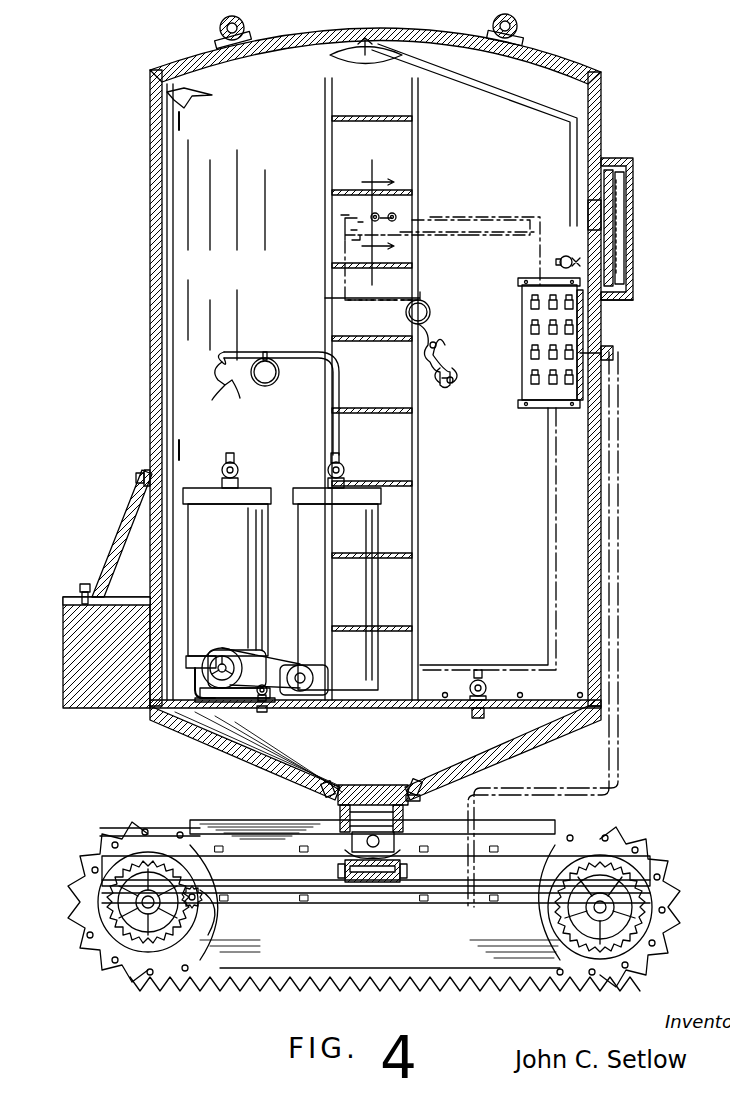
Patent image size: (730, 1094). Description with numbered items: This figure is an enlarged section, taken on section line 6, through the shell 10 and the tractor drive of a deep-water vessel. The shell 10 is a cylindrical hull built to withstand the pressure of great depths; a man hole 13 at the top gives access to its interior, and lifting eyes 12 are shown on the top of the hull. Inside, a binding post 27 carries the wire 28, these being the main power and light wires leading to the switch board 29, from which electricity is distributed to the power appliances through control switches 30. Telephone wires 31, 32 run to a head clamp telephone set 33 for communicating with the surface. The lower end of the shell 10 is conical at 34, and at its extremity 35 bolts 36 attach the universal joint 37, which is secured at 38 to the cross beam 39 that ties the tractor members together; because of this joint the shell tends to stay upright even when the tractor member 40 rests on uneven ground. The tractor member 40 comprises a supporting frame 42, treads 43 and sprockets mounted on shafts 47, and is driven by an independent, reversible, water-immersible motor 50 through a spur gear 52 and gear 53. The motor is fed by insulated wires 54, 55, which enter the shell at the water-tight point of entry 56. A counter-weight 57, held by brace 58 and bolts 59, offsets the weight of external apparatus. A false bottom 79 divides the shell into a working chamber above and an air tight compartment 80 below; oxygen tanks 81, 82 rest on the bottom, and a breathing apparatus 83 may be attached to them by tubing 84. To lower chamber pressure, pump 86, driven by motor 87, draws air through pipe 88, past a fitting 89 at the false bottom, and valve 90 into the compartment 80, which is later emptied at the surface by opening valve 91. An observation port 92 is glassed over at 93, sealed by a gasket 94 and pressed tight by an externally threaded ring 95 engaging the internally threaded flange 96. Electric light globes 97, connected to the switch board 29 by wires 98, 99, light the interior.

The section line 6- 6 is at (378, 220).
The shell 10 is at (150, 292).
The lifting eye bolts 12 is at (220, 30).
The man hole 13 is at (340, 76).
The binding post 27 is at (378, 214).
The wire 28 is at (396, 217).
The switch board 29 is at (525, 372).
The control switches 30 is at (568, 397).
The telephone wire 31 is at (418, 300).
The telephone wire 32 is at (380, 304).
The head clamp telephone set 33 is at (455, 360).
The conical lower end 34 is at (250, 752).
The extremity 35 is at (372, 785).
The bolts 36 is at (418, 801).
The universal joint 37 is at (340, 815).
The securing point 38 is at (407, 871).
The cross beam 39 is at (385, 884).
The tractor member 40 is at (488, 977).
The supporting frame 42 is at (277, 877).
The treads 43 is at (580, 987).
The shaft 47 is at (148, 905).
The motor 50 is at (200, 912).
The spur gear 52 is at (198, 894).
The gear 53 is at (137, 880).
The wire 54 is at (607, 761).
The wire 55 is at (620, 766).
The point of entry 56 is at (612, 350).
The counter-weight 57 is at (80, 675).
The brace 58 is at (120, 540).
The bolts 59 is at (136, 479).
The false bottom 79 is at (510, 710).
The air tight compartment 80 is at (357, 743).
The oxygen tank 81 is at (227, 575).
The oxygen tank 82 is at (337, 571).
The breathing apparatus 83 is at (236, 382).
The tubing 84 is at (342, 386).
The pump 86 is at (225, 650).
The motor 87 is at (303, 664).
The pipe 88 is at (162, 228).
The bolt 89 is at (266, 712).
The valve 90 is at (264, 684).
The valve 91 is at (482, 682).
The observation port 92 is at (596, 218).
The glass 93 is at (618, 220).
The gasket 94 is at (603, 160).
The externally threaded ring 95 is at (628, 182).
The internally threaded flange 96 is at (632, 300).
The electric light globes 97 is at (418, 74).
The wire 98 is at (488, 212).
The wire 99 is at (478, 236).